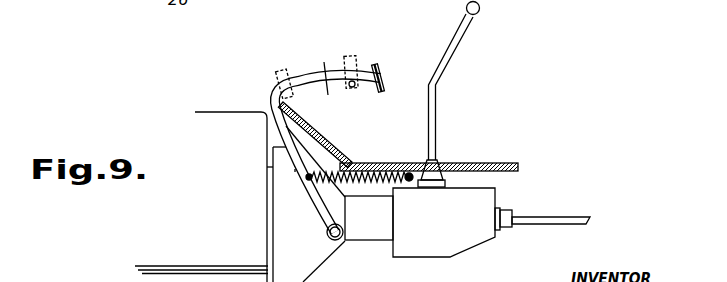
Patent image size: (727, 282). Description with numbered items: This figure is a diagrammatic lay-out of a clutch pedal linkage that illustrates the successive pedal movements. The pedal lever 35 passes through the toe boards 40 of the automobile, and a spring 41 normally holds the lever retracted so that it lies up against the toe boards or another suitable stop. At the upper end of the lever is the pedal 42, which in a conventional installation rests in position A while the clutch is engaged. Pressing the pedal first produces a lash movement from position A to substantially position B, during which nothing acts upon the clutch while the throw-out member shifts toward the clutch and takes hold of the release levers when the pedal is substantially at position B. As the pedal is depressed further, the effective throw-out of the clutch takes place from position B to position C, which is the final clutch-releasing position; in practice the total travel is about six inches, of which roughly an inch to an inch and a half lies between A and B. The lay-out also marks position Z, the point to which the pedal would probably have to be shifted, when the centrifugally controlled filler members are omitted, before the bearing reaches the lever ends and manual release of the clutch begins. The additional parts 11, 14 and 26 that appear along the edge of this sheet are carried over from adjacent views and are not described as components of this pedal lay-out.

The control lever 11 is at (449, 93).
The frame member 14 is at (128, 9).
The arm 26 is at (352, 0).
The bent tubular lever arm 35 is at (304, 75).
The hatched guide plate 40 is at (332, 148).
The coil spring 41 is at (373, 172).
The contact pad 42 is at (383, 93).
The position A is at (383, 72).
The clamp position B is at (357, 62).
The clamp position C is at (282, 70).
The reference position Z is at (328, 95).